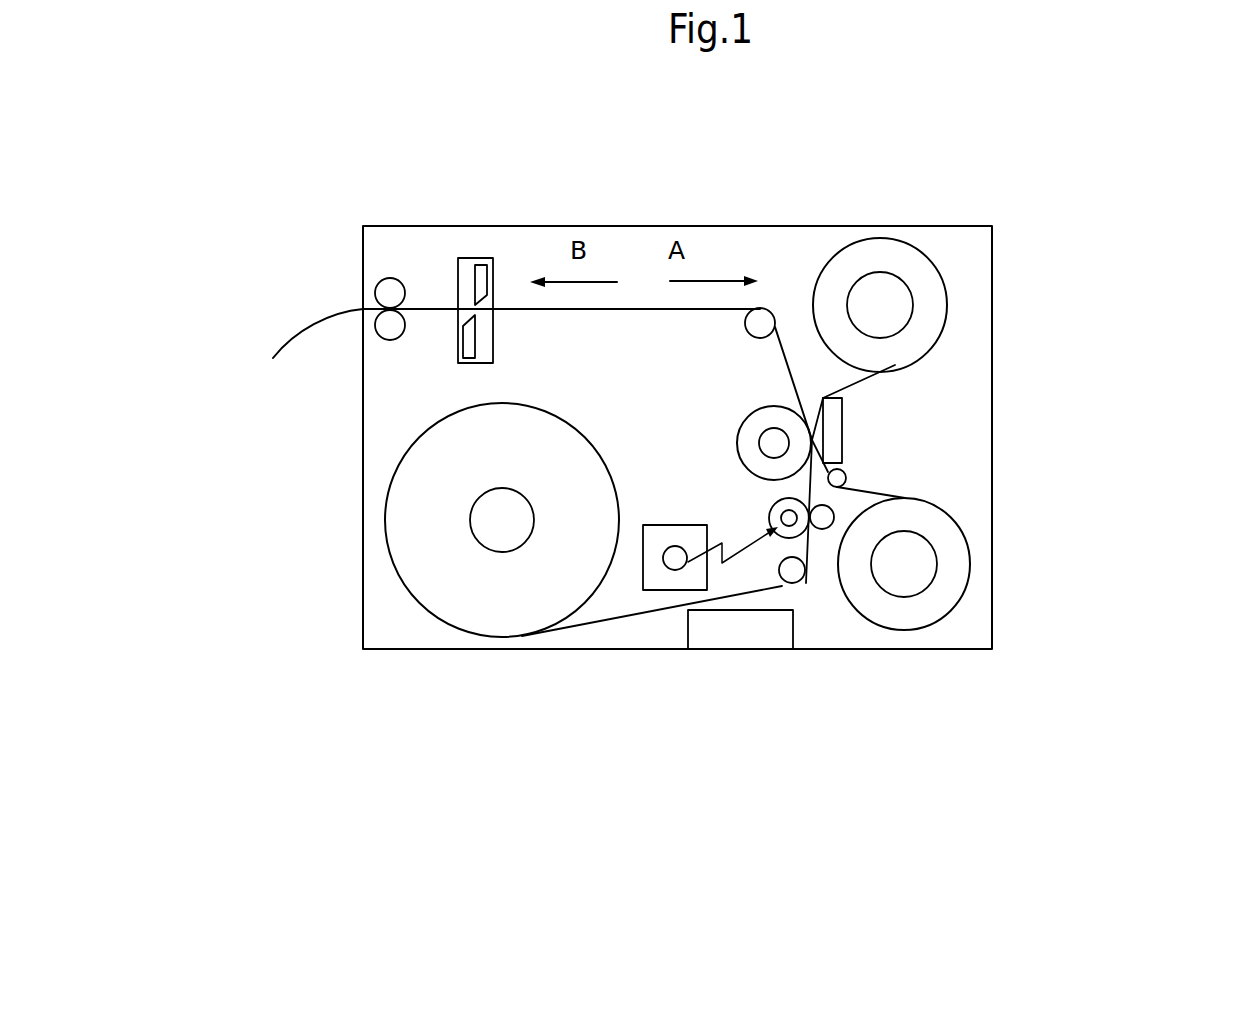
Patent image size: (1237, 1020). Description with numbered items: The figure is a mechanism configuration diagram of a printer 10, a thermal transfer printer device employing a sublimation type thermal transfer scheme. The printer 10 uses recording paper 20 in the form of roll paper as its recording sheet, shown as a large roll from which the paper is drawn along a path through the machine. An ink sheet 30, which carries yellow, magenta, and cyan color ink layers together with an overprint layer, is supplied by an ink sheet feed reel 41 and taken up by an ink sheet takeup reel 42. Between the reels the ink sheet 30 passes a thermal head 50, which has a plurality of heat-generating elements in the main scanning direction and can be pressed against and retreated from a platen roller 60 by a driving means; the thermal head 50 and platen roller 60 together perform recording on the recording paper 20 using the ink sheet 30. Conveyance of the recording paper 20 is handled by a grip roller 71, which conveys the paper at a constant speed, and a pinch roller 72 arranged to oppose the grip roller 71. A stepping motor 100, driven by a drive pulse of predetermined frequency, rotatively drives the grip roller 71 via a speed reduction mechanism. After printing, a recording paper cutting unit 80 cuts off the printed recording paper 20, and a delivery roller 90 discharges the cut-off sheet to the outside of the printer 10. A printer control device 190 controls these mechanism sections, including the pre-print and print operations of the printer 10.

The printer 10 is at (706, 151).
The recording paper 20 is at (613, 618).
The ink sheet 30 is at (873, 492).
The ink sheet feed reel 41 is at (933, 260).
The ink sheet takeup reel 42 is at (972, 560).
The thermal head 50 is at (842, 423).
The platen roller 60 is at (745, 414).
The grip roller 71 is at (775, 504).
The pinch roller 72 is at (823, 529).
The recording paper cutting unit 80 is at (462, 258).
The delivery roller 90 is at (378, 289).
The stepping motor 100 is at (663, 583).
The printer control device 190 is at (722, 640).